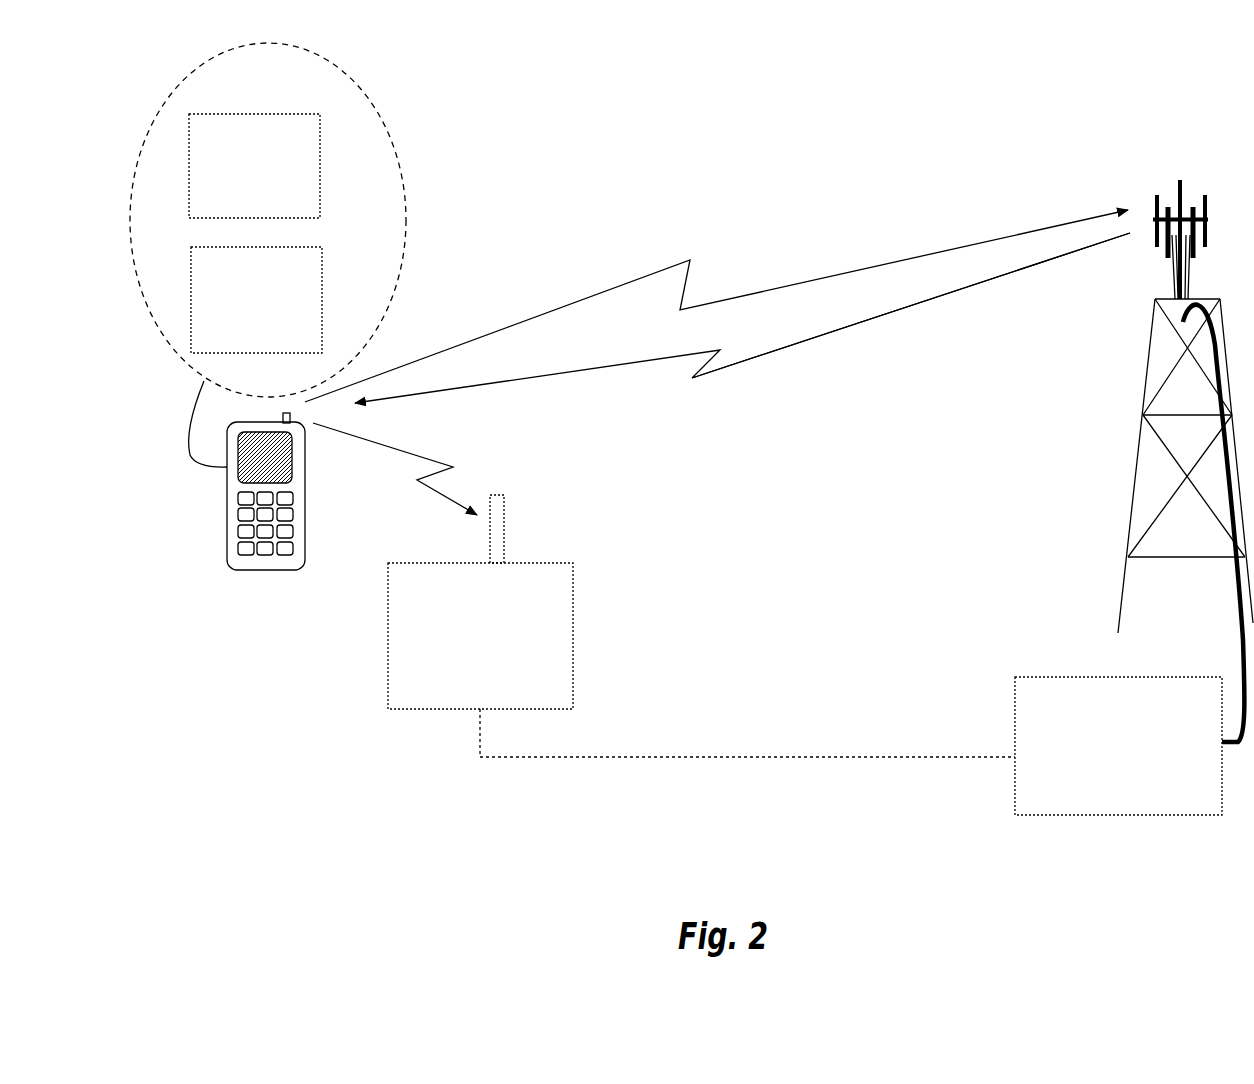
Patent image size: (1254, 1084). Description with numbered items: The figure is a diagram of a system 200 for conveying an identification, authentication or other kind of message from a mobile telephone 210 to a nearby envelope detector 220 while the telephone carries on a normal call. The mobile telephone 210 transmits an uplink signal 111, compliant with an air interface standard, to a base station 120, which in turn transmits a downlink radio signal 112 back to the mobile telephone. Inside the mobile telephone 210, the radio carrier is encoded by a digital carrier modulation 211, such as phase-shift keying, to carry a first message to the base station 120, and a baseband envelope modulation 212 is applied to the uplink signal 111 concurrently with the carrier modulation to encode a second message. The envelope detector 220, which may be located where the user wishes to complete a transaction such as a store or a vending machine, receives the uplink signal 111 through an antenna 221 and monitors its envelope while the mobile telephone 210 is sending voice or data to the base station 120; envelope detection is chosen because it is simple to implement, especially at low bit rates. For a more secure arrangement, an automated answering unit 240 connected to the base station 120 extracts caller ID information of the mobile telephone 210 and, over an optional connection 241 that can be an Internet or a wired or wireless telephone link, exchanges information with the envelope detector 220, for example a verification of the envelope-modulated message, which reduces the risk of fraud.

The uplink signal 111 is at (806, 279).
The downlink radio signal 112 is at (843, 325).
The base station 120 is at (1150, 340).
The system 200 is at (738, 492).
The mobile telephone 210 is at (263, 563).
The digital carrier modulation 211 is at (320, 196).
The baseband envelope modulation 212 is at (322, 310).
The envelope detector 220 is at (573, 650).
The antenna 221 is at (504, 518).
The automated answering unit 240 is at (1015, 727).
The optional connection 241 is at (803, 757).